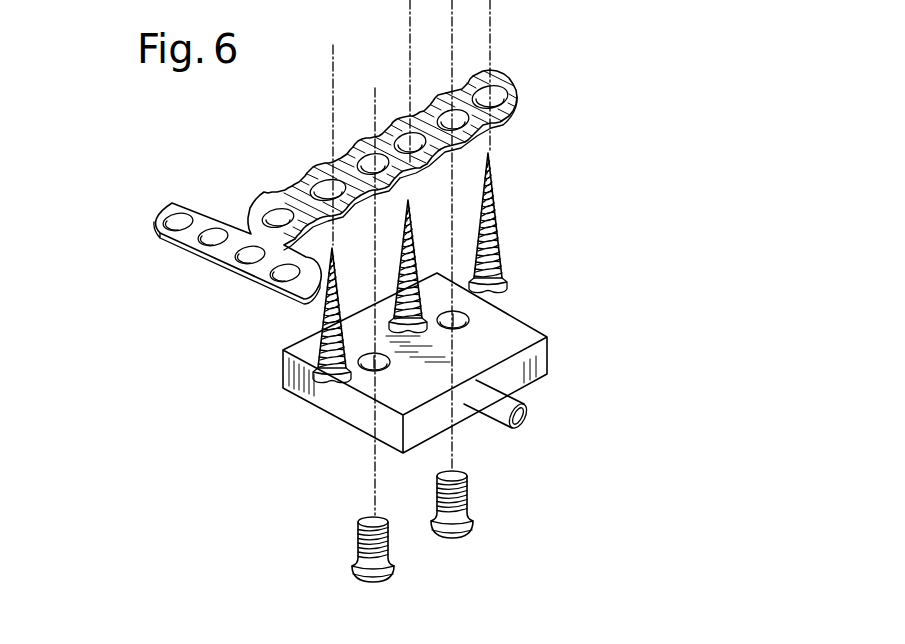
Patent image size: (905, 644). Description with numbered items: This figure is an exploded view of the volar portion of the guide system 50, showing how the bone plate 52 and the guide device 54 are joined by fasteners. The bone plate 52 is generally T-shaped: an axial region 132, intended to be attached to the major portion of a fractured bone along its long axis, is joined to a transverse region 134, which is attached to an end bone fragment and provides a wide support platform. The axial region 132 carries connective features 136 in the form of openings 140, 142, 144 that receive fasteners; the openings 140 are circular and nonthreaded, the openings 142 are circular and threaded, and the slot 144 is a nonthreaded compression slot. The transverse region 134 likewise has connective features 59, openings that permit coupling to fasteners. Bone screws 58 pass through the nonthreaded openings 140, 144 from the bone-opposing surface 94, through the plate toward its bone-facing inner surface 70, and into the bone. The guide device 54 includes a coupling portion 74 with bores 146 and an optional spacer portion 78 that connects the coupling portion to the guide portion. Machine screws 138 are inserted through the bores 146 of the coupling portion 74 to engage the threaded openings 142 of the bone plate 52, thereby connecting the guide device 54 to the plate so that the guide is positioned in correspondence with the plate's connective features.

The guide system 50 is at (88, 307).
The bone plate 52 is at (264, 156).
The guide device 54 is at (240, 406).
The bone screws 58 is at (503, 207).
The connective features 59 is at (293, 282).
The inner surface 70 is at (290, 198).
The coupling portion 74 is at (338, 436).
The spacer portion 78 is at (492, 447).
The bone-opposing surface 94 is at (343, 204).
The axial region 132 is at (399, 117).
The transverse region 134 is at (222, 284).
The connective features 136 is at (360, 155).
The machine screws 138 is at (468, 494).
The circular openings 140 is at (263, 221).
The threaded openings 142 is at (466, 123).
The compression slot 144 is at (312, 186).
The bores 146 is at (382, 368).